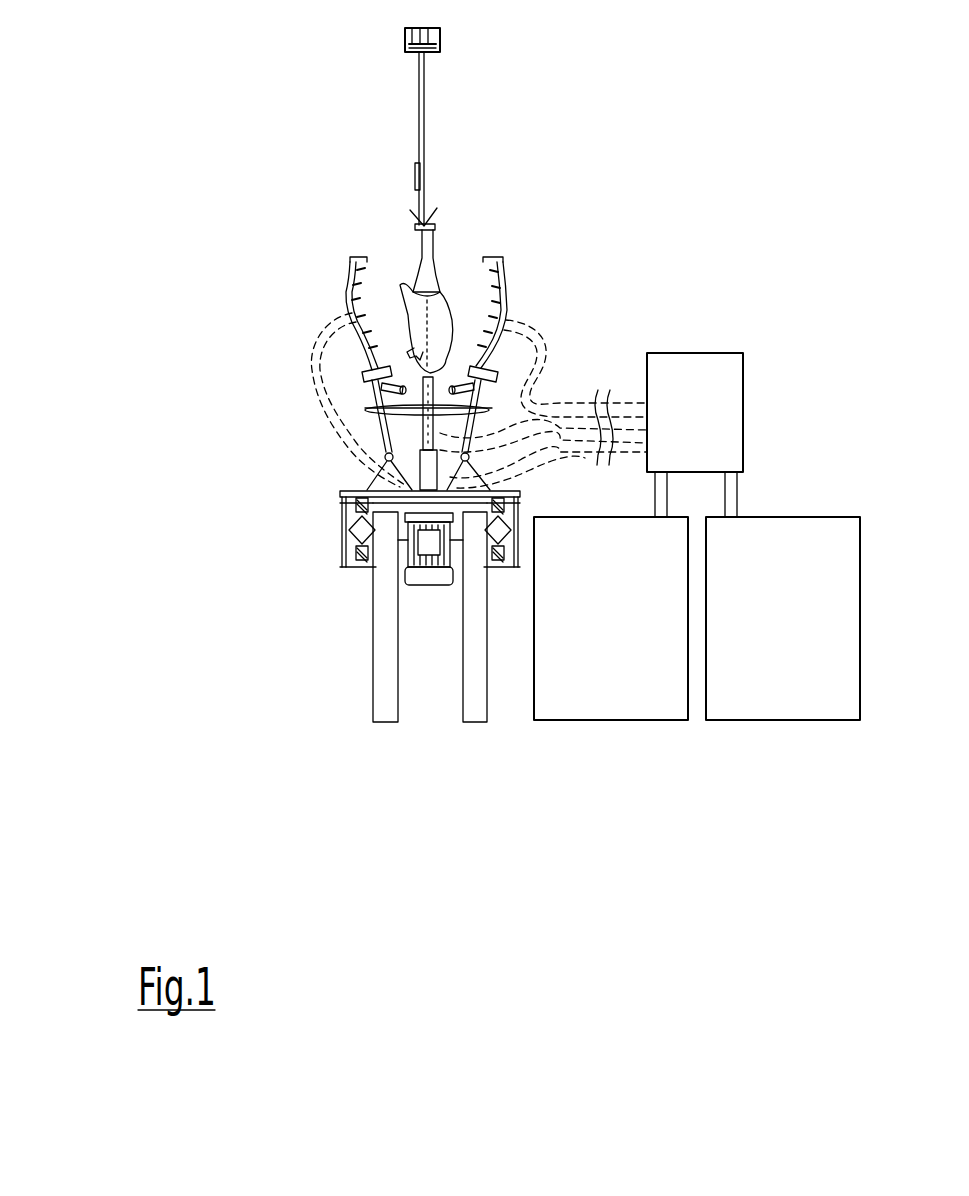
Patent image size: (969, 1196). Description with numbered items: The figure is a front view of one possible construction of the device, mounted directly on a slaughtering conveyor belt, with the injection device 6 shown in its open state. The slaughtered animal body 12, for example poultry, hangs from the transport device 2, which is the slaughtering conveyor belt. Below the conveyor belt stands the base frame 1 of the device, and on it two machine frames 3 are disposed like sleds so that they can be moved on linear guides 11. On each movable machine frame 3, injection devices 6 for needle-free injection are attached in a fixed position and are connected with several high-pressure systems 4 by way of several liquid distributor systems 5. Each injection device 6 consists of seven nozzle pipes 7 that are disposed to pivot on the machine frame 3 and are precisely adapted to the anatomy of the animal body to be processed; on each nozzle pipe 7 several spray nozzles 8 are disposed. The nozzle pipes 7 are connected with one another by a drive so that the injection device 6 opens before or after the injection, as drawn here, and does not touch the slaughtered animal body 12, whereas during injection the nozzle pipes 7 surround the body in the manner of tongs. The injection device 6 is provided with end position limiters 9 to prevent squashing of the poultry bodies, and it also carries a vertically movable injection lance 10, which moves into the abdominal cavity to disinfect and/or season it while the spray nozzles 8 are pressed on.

The base frame 1 is at (387, 660).
The transport device 2 is at (420, 88).
The machine frame 3 is at (340, 493).
The high-pressure system 4 is at (662, 665).
The liquid distributor system 5 is at (625, 427).
The injection device 6 is at (383, 433).
The nozzle pipe 7 is at (345, 298).
The spray nozzle 8 is at (365, 257).
The end position limiter 9 is at (380, 386).
The injection lance 10 is at (425, 395).
The linear guide 11 is at (343, 550).
The slaughtered animal body 12 is at (435, 320).